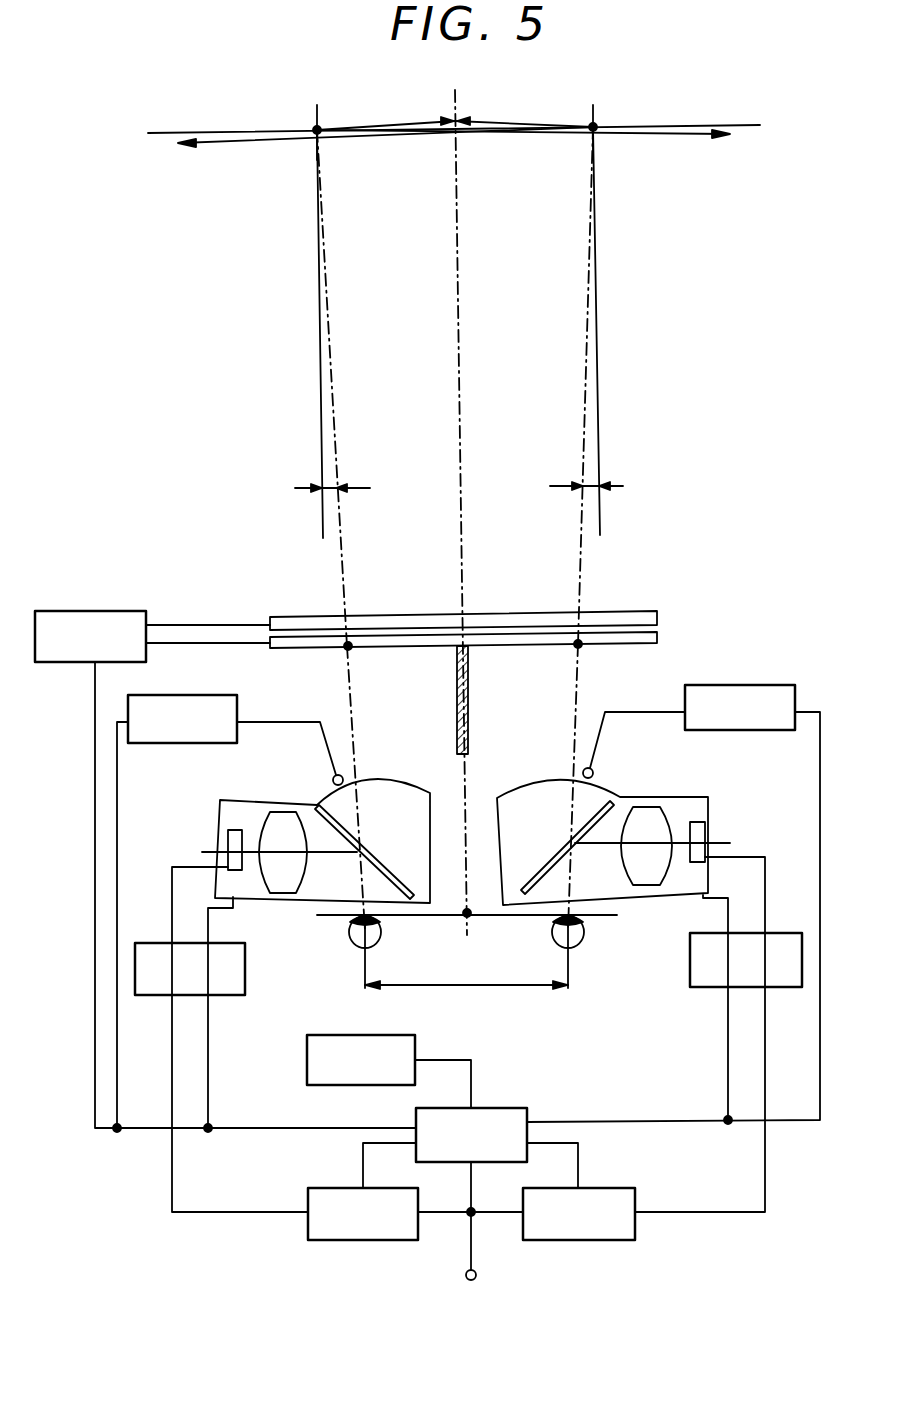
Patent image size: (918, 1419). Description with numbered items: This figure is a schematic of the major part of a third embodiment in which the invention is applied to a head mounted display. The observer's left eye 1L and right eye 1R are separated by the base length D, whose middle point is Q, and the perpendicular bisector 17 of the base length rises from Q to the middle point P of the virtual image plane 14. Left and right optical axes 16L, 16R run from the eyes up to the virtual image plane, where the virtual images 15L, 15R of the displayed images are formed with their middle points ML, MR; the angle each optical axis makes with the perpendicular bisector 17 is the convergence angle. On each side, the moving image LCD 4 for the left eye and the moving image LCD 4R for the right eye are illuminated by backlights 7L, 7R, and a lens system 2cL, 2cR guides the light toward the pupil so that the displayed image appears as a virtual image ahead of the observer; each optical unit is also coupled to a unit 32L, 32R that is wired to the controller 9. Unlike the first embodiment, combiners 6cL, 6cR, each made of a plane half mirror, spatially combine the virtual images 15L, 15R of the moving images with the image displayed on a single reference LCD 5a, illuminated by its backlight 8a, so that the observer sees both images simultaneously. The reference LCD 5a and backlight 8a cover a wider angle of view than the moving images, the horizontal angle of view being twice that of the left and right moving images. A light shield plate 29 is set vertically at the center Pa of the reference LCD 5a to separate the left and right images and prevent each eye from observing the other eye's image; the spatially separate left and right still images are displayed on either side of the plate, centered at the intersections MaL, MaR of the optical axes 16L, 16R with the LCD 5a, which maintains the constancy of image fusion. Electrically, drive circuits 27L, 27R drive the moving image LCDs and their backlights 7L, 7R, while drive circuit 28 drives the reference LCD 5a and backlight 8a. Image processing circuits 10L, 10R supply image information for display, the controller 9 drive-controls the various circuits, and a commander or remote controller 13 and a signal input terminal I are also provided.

The virtual image plane 14 is at (748, 125).
The virtual image 15L is at (222, 133).
The virtual image 15R is at (700, 128).
The middle point of left virtual image ML is at (315, 128).
The middle point of right virtual image MR is at (596, 125).
The middle point of virtual image plane P is at (452, 118).
The perpendicular bisector 17 is at (460, 287).
The optical axis for left eye 16L is at (345, 553).
The optical axis for right eye 16R is at (580, 553).
The backlight 8a is at (658, 613).
The reference LCD 5a is at (658, 638).
The drive circuit 28 is at (225, 871).
The intersection of left optical axis with reference LCD MaL is at (346, 650).
The intersection of right optical axis with reference LCD MaR is at (580, 648).
The center of reference LCD Pa is at (456, 660).
The light shield plate 29 is at (470, 705).
The left rotation drive 32L is at (230, 911).
The right rotation drive 32R is at (673, 904).
The moving image LCD 4 is at (223, 777).
The moving image LCD 4R is at (693, 818).
The lens system 2cL is at (283, 815).
The lens system 2cR is at (642, 810).
The combiner 6cL is at (385, 865).
The combiner 6cR is at (550, 860).
The backlight 7L is at (238, 828).
The backlight 7R is at (706, 823).
The middle point of base length Q is at (469, 910).
The left eye 1L is at (353, 935).
The right eye 1R is at (582, 937).
The base length D is at (466, 970).
The drive circuit 27L is at (190, 969).
The drive circuit 27R is at (746, 960).
The commander 13 is at (389, 1071).
The controller 9 is at (470, 1189).
The image processing circuit 10L is at (415, 1214).
The image processing circuit 10R is at (579, 1214).
The signal input terminal I is at (477, 1275).